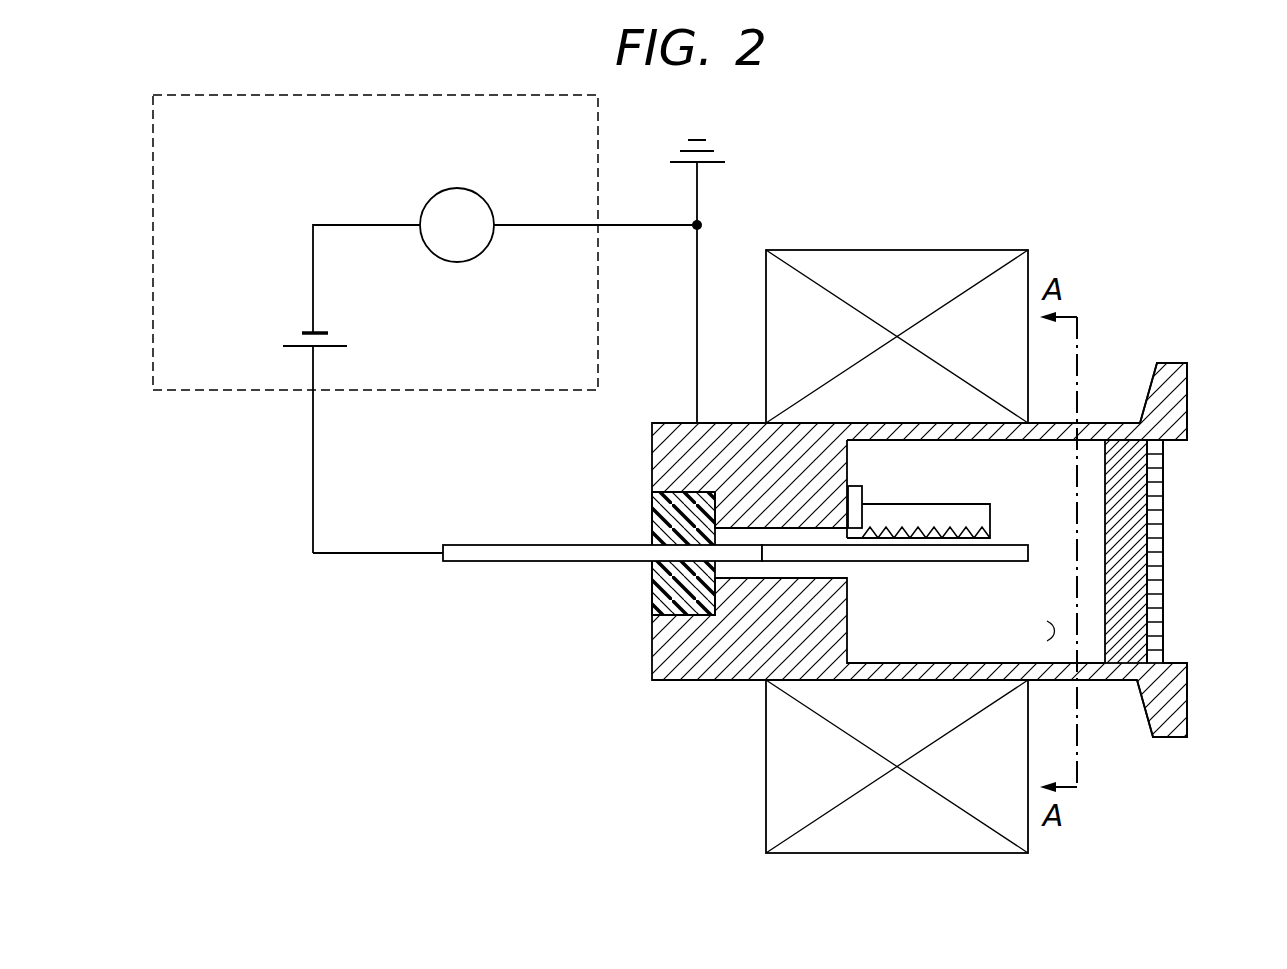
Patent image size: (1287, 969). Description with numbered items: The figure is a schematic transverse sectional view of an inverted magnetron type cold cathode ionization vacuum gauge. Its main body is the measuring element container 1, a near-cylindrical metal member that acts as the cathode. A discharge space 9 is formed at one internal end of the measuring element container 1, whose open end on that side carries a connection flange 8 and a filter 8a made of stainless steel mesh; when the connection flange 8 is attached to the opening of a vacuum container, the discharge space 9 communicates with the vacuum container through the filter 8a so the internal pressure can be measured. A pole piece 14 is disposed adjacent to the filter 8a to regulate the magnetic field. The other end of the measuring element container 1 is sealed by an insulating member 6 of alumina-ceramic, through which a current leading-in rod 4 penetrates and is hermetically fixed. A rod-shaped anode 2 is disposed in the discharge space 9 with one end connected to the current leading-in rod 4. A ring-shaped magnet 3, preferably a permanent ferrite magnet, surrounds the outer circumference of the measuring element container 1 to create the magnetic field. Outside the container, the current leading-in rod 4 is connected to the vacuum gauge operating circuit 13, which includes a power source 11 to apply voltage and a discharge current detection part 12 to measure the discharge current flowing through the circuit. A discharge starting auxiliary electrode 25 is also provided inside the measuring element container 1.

The measuring element container 1 is at (665, 655).
The anode 2 is at (920, 554).
The magnet 3 is at (913, 265).
The current leading-in rod 4 is at (485, 556).
The insulating member 6 is at (660, 603).
The connection flange 8 is at (1182, 712).
The filter 8a is at (1158, 545).
The discharge space 9 is at (1050, 631).
The power source 11 is at (303, 332).
The discharge current detection part 12 is at (483, 200).
The vacuum gauge operating circuit 13 is at (420, 392).
The pole piece 14 is at (1135, 485).
The discharge starting auxiliary electrode 25 is at (928, 512).